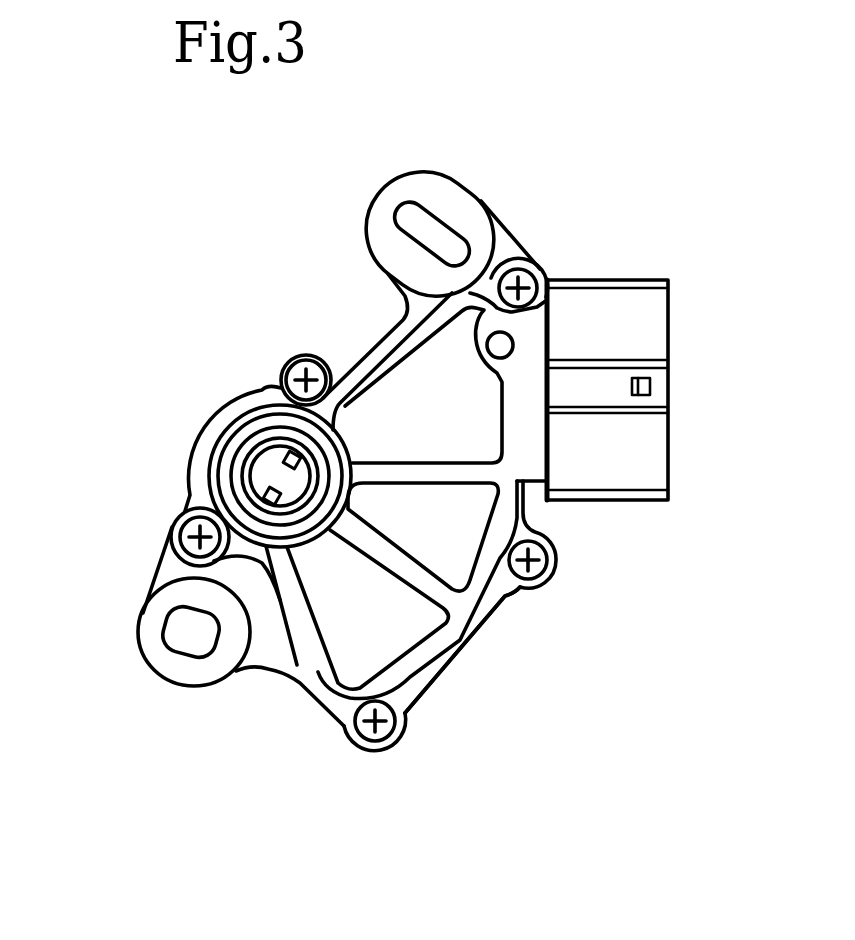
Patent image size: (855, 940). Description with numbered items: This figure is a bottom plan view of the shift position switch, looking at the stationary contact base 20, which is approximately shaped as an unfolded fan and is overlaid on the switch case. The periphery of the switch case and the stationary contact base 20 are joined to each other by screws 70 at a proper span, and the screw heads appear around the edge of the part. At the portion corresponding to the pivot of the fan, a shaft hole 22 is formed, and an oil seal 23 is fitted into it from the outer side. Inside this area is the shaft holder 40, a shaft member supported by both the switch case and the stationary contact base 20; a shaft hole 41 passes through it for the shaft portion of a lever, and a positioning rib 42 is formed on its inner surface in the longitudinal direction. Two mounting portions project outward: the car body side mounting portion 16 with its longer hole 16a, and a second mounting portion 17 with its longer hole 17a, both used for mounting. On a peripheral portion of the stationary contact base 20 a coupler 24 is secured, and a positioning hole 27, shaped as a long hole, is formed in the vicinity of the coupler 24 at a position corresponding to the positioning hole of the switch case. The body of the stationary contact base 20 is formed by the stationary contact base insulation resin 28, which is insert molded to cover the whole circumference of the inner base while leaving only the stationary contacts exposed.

The car body side mounting portion 16 is at (423, 188).
The longer hole 16a is at (444, 228).
The positioning hole 27 is at (502, 343).
The coupler 24 is at (638, 325).
The shaft hole 22 is at (281, 439).
The oil seal 23 is at (243, 442).
The shaft holder 40 is at (240, 462).
The shaft hole 41 is at (265, 478).
The positioning rib 42 is at (266, 493).
The screws 70 is at (178, 528).
The mounting portion 17 is at (192, 672).
The longer hole 17a is at (186, 636).
The stationary contact base insulation resin 28 is at (447, 657).
The stationary contact base 20 is at (500, 628).